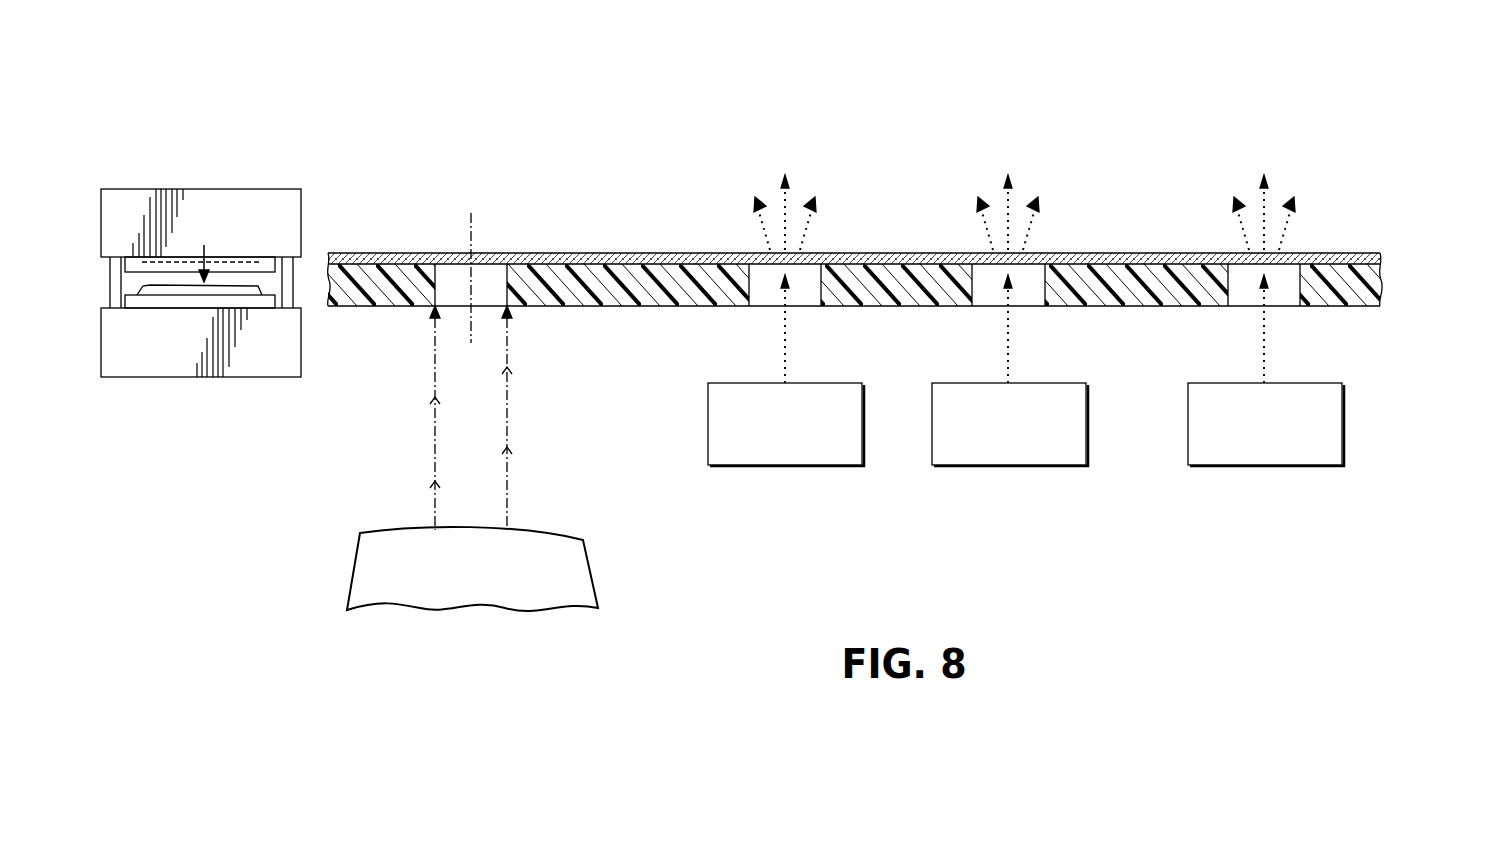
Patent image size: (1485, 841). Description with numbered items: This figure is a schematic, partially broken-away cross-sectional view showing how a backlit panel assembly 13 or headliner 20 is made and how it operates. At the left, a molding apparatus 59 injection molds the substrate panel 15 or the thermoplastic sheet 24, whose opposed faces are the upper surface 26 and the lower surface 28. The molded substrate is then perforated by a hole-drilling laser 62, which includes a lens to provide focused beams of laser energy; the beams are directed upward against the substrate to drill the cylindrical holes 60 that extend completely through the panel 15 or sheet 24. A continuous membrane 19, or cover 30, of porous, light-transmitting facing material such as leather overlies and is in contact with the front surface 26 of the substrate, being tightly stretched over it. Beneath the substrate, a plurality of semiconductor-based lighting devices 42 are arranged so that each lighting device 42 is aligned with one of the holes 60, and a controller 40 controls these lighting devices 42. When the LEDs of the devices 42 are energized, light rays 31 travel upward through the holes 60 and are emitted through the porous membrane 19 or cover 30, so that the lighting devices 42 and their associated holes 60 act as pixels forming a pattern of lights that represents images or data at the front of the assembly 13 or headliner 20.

The low-profile backlit panel assembly 13 is at (900, 214).
The headliner 20 is at (900, 214).
The continuous membrane 19 is at (876, 208).
The cover 30 is at (1380, 258).
The substrate panel 15 is at (900, 261).
The substrate panel 24 is at (1380, 285).
The upper surface 26 is at (604, 275).
The lower surface 28 is at (604, 312).
The holes 60 is at (507, 284).
The light rays 31 is at (783, 365).
The first controller 40 is at (1026, 340).
The semiconductor-based lighting devices 42 is at (755, 466).
The laser 62 is at (544, 526).
The molding apparatus 59 is at (200, 189).